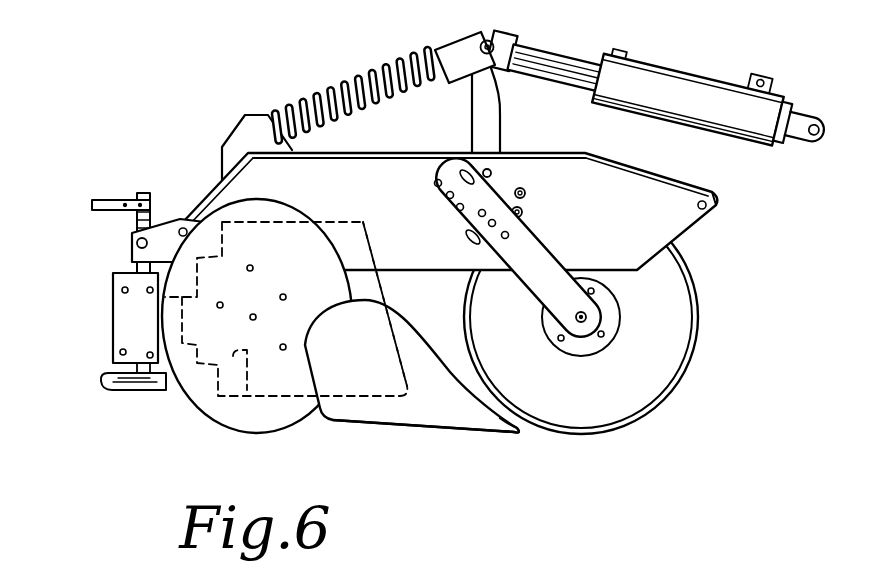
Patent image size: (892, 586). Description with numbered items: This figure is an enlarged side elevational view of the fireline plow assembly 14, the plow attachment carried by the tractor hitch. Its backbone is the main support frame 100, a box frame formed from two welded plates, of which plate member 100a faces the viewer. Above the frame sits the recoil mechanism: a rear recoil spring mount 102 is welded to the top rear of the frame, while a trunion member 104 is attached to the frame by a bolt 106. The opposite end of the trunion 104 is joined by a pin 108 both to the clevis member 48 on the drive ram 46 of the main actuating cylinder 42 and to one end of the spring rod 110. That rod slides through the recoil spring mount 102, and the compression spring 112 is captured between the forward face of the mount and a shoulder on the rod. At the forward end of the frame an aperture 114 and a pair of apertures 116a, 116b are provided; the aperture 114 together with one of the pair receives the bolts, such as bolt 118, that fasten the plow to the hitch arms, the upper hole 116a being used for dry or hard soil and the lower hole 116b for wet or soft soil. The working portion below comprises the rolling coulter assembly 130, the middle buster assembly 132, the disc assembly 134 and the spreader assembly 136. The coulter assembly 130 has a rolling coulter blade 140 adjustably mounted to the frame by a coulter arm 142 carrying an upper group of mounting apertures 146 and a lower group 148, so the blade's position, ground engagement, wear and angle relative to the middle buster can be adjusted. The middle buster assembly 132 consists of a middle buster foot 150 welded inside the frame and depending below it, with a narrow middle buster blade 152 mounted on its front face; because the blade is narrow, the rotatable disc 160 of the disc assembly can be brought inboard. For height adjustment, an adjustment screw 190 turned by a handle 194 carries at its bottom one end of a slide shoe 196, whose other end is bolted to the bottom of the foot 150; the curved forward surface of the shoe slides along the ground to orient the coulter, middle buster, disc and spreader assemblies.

The fireline plow assembly 14 is at (227, 58).
The main actuating cylinder 42 is at (712, 97).
The drive ram 46 is at (550, 55).
The clevis member 48 is at (508, 37).
The main support frame 100 is at (479, 206).
The plate member 100a is at (450, 211).
The rear recoil spring mount 102 is at (229, 137).
The trunion member 104 is at (472, 118).
The bolt 106 is at (490, 170).
The pin 108 is at (489, 40).
The spring rod 110 is at (447, 41).
The compression spring 112 is at (359, 77).
The aperture 114 is at (722, 195).
The aperture 116a is at (526, 191).
The aperture 116b is at (524, 212).
The bolt 118 is at (531, 441).
The rolling coulter assembly 130 is at (641, 431).
The middle buster assembly 132 is at (438, 440).
The disc assembly 134 is at (226, 433).
The spreader assembly 136 is at (104, 324).
The rolling coulter blade 140 is at (584, 324).
The coulter arm 142 is at (490, 245).
The upper group of mounting apertures 146 is at (436, 218).
The lower group of mounting apertures 148 is at (473, 236).
The middle buster foot 150 is at (372, 284).
The middle buster blade 152 is at (412, 366).
The rotatable disc 160 is at (286, 309).
The adjustment screw 190 is at (157, 196).
The handle 194 is at (100, 200).
The slide shoe 196 is at (114, 390).